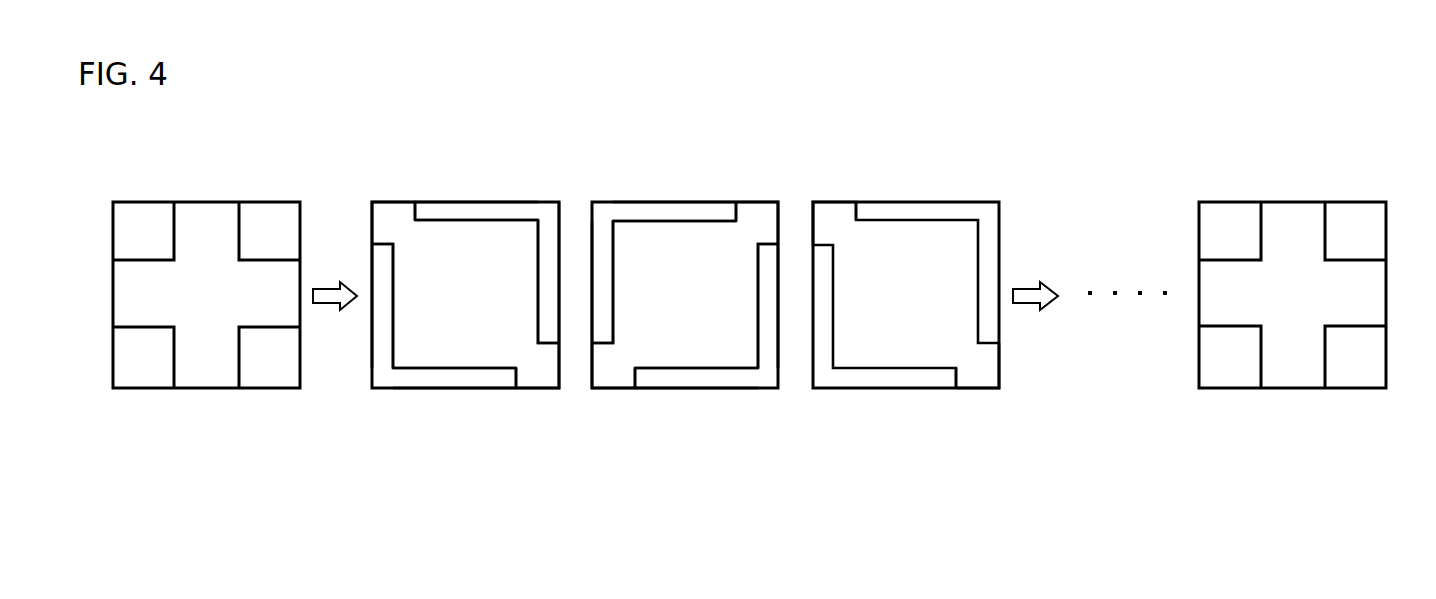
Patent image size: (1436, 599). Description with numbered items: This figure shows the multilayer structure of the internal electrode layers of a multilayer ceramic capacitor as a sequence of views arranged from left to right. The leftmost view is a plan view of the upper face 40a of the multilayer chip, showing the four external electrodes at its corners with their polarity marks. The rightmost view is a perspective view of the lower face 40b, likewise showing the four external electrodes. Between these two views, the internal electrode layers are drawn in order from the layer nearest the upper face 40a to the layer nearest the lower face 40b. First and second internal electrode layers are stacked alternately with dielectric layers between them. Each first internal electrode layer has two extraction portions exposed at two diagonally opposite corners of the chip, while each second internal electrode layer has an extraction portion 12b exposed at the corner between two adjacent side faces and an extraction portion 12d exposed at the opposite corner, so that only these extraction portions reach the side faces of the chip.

The extraction portion 12b is at (760, 215).
The extraction portion 12d is at (623, 373).
The upper face 40a is at (182, 293).
The lower face 40b is at (1317, 296).